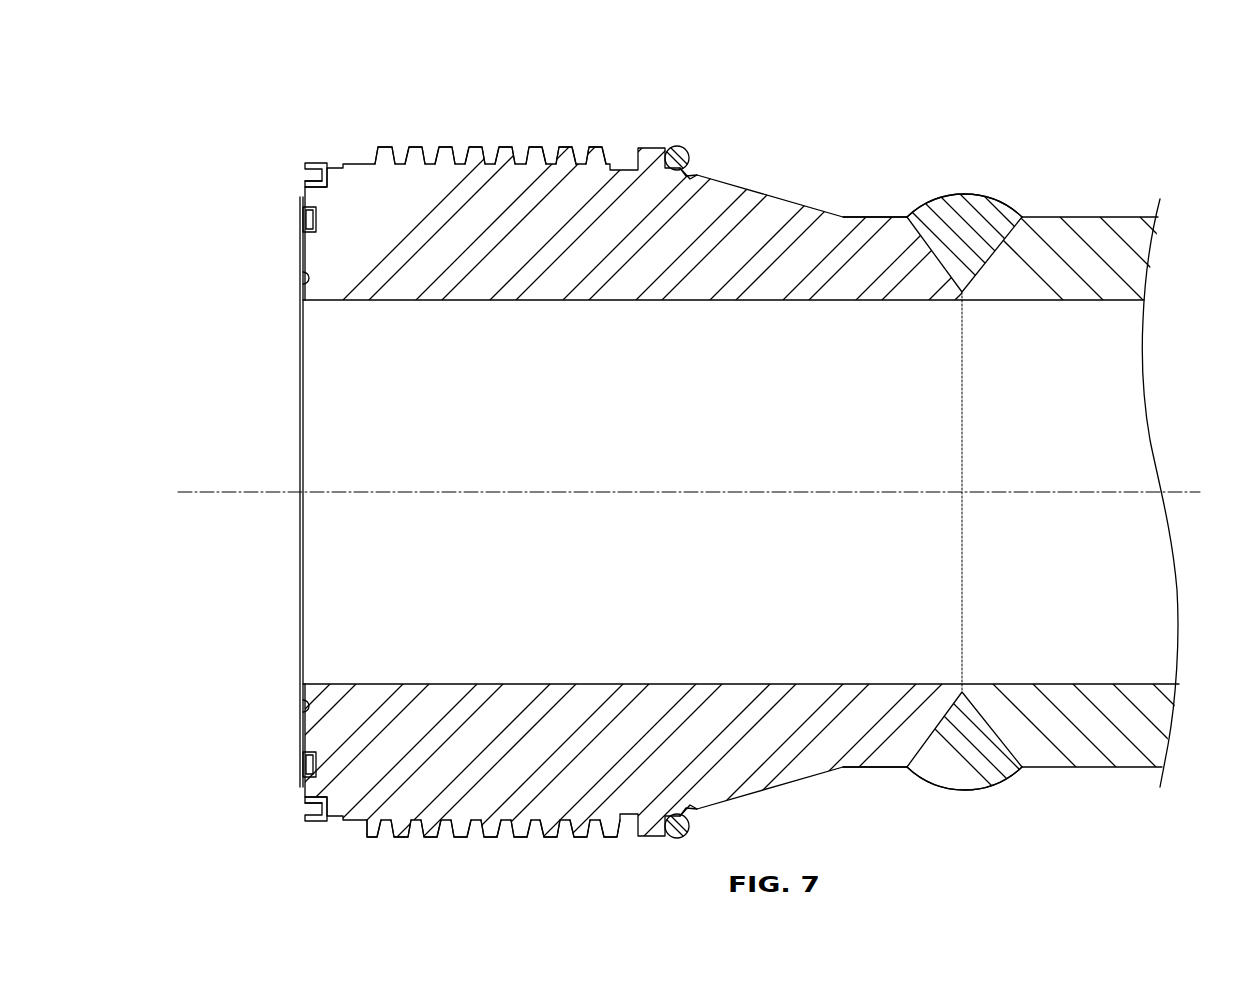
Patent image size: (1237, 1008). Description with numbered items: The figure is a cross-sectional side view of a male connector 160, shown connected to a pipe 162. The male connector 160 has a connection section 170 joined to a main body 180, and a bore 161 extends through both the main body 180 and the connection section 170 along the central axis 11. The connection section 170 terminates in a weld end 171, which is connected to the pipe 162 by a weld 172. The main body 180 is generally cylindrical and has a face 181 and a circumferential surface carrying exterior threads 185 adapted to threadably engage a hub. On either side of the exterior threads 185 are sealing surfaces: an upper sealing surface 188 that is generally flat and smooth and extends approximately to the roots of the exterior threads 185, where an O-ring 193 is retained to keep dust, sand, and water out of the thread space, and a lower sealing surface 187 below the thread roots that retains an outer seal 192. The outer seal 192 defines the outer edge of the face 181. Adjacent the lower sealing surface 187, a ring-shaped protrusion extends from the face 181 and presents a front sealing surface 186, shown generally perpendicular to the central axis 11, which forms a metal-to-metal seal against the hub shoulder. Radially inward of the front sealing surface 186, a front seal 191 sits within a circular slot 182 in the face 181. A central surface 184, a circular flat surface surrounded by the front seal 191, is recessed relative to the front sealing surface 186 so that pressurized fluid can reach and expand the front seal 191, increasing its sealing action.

The central axis 11 is at (232, 492).
The male connector 160 is at (690, 64).
The bore 161 is at (924, 405).
The pipe 162 is at (1105, 250).
The connection section 170 is at (880, 250).
The weld end 171 is at (955, 218).
The weld 172 is at (993, 232).
The main body 180 is at (598, 200).
The face 181 is at (268, 698).
The circular slot 182 is at (303, 253).
The central surface 184 is at (303, 292).
The exterior threads 185 is at (412, 148).
The front sealing surface 186 is at (302, 197).
The lower sealing surface 187 is at (302, 186).
The upper sealing surface 188 is at (697, 176).
The front seal 191 is at (304, 217).
The outer seal 192 is at (312, 162).
The O-ring 193 is at (688, 152).